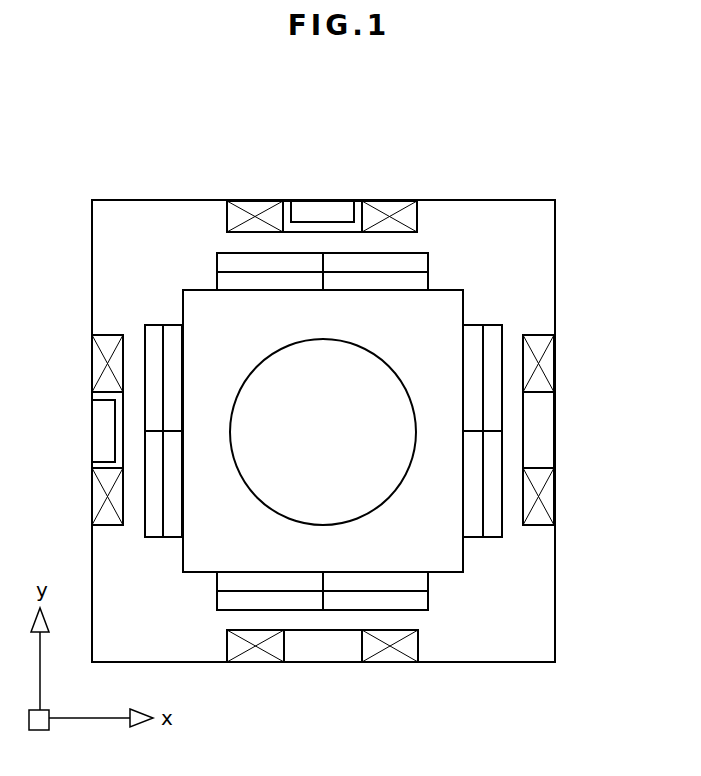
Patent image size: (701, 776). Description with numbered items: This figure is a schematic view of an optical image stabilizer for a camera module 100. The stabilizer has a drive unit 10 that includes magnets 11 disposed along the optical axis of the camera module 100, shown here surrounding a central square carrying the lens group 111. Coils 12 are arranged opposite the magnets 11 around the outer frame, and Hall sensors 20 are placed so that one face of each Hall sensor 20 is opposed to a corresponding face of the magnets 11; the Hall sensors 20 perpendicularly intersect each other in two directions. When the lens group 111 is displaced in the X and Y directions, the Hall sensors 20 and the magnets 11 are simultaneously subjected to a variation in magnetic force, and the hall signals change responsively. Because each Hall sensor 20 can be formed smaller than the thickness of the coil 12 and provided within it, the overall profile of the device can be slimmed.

The camera module 100 is at (371, 371).
The drive unit 10 is at (299, 185).
The magnets 11 is at (224, 262).
The coil 12 is at (255, 208).
The Hall sensor 20 is at (324, 212).
The lens group 111 is at (303, 445).